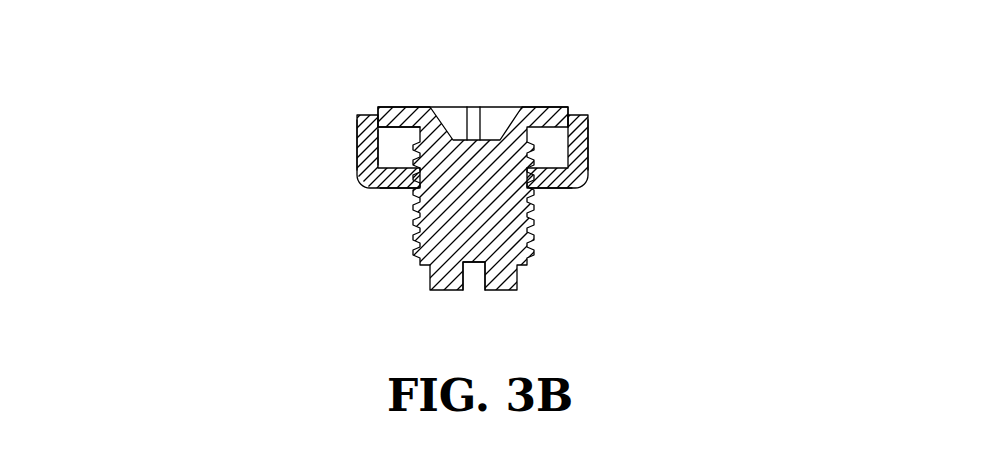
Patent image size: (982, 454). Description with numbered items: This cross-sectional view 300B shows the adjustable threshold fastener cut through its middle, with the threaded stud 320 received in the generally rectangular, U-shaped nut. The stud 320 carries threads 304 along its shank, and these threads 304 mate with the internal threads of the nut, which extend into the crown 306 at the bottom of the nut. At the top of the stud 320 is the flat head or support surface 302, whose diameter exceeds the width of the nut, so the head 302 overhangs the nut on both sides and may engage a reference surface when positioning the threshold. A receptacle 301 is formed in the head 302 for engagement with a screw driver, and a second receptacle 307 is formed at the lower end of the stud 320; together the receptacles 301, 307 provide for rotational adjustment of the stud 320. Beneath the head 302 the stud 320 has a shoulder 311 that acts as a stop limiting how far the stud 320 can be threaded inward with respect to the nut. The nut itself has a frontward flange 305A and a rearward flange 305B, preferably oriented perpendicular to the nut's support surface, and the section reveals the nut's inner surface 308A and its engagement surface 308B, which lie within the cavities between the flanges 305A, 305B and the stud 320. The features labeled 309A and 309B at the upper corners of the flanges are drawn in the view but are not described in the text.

The cross-sectional view 300B is at (243, 50).
The receptacle 301 is at (468, 120).
The head or support surface 302 is at (526, 110).
The threads on the stud 304 is at (418, 213).
The frontward flange 305A is at (590, 142).
The rearward flange 305B is at (357, 143).
The crown 306 is at (573, 188).
The receptacle 307 is at (475, 280).
The inner surface 308A is at (392, 166).
The engagement surface 308B is at (410, 189).
The cap rim 309A is at (581, 114).
The cap rim 309B is at (364, 118).
The shoulder 311 is at (402, 134).
The threaded stud 320 is at (495, 196).